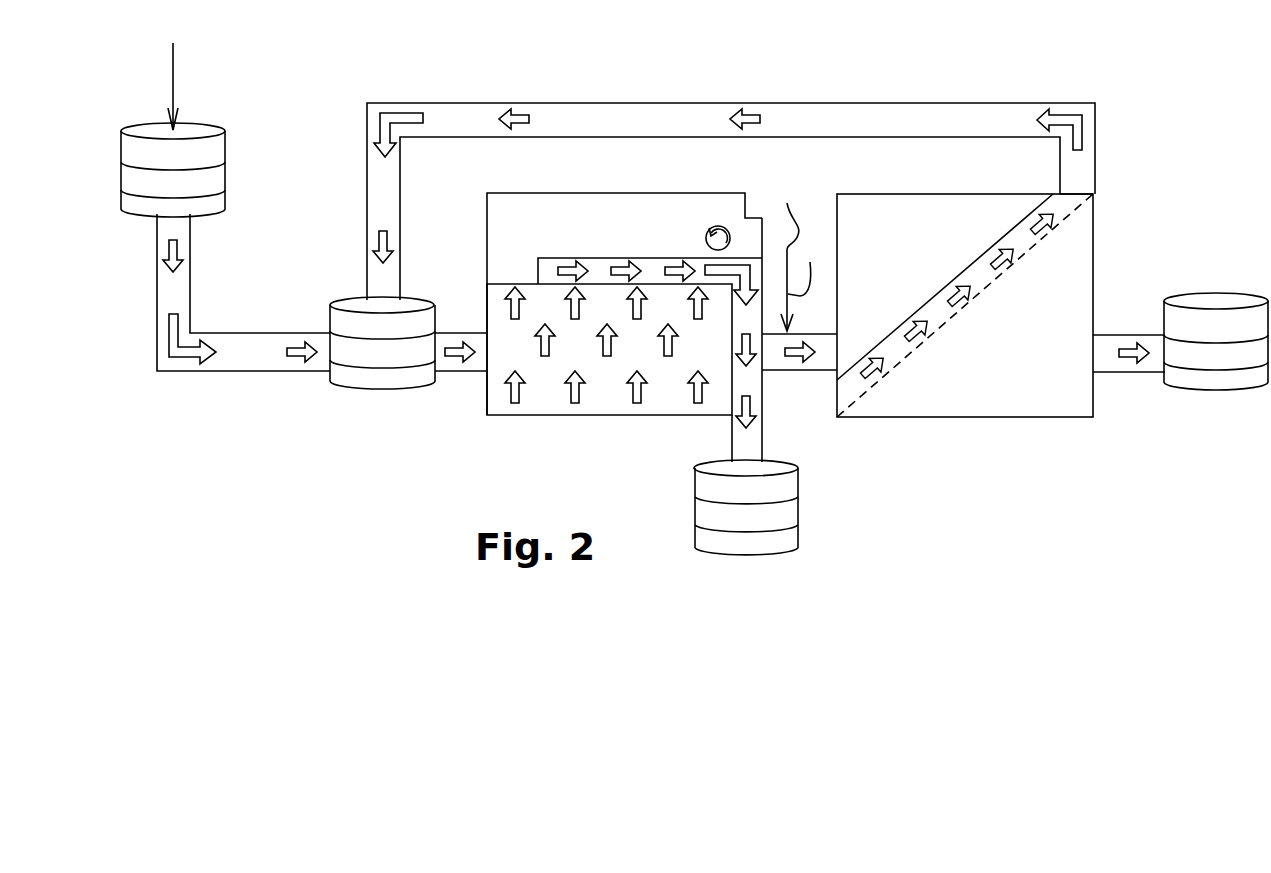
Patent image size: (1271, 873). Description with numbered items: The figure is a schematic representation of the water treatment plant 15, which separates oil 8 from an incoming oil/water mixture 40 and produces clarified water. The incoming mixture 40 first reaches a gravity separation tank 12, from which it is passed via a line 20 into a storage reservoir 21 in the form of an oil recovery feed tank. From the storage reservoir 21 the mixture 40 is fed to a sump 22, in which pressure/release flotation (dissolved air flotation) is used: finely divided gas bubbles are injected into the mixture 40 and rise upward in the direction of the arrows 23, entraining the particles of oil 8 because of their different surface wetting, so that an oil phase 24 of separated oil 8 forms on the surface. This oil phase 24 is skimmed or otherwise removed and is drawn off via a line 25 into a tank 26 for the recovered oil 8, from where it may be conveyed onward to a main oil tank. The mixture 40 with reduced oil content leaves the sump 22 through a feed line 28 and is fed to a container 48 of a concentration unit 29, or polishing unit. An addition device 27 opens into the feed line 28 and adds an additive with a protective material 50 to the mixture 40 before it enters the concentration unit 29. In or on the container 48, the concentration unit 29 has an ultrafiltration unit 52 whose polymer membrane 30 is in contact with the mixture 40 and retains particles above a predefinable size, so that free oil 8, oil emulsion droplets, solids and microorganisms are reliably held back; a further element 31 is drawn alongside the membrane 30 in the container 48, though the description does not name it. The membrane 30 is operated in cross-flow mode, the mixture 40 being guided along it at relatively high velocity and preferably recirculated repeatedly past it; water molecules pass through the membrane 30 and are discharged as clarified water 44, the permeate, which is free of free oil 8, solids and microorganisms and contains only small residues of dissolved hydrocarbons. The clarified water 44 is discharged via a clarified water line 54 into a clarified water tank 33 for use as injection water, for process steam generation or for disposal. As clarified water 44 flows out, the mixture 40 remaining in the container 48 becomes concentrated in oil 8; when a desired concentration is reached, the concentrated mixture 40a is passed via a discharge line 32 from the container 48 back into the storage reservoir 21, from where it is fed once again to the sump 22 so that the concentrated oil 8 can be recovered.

The water treatment plant 15 is at (1045, 53).
The gravity separation tank 12 is at (123, 146).
The mixture 40 is at (174, 90).
The concentrated mixture 40a is at (603, 103).
The line 20 is at (245, 372).
The storage reservoir 21 is at (391, 380).
The sump 22 is at (574, 415).
The arrows 23 is at (537, 378).
The oil phase 24 is at (547, 268).
The oil 8 is at (641, 411).
The line 25 is at (730, 433).
The tank 26 is at (752, 556).
The addition device 27 is at (787, 255).
The feed line 28 is at (783, 373).
The concentration unit 29 is at (908, 417).
The membrane 30 is at (1032, 252).
The separator wall 31 is at (937, 315).
The discharge line 32 is at (982, 125).
The clarified water tank 33 is at (1220, 387).
The clarified water 44 is at (1058, 355).
The container 48 is at (910, 194).
The protective material 50 is at (811, 266).
The ultrafiltration unit 52 is at (1037, 497).
The clarified water line 54 is at (1130, 373).